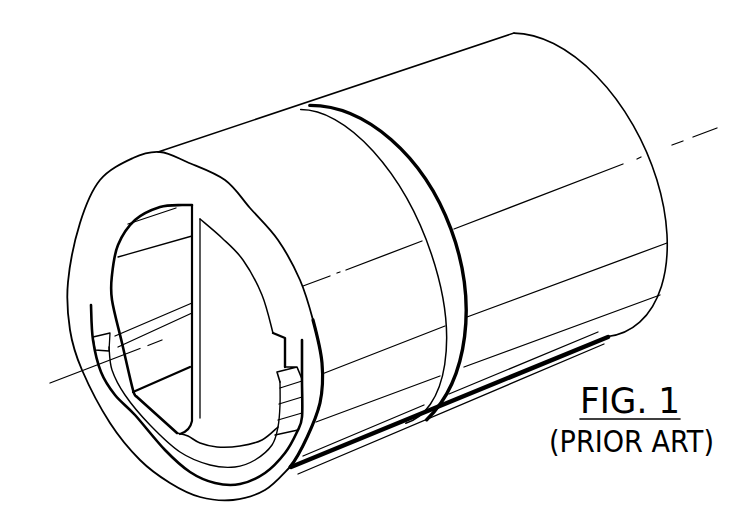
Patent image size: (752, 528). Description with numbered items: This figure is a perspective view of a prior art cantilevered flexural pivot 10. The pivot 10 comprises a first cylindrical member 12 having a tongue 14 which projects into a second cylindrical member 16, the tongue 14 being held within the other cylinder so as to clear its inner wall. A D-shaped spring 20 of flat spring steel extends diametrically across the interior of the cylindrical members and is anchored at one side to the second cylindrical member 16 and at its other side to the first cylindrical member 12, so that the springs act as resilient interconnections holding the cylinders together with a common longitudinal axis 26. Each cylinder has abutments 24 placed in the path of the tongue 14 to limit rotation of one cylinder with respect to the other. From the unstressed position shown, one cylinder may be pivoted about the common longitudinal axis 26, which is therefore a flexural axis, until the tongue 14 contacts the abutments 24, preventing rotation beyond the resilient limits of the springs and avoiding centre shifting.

The pivot 10 is at (376, 56).
The first cylindrical member 12 is at (564, 65).
The tongue 14 is at (198, 452).
The second cylindrical member 16 is at (82, 238).
The D-shaped spring 20 is at (208, 342).
The abutments 24 is at (80, 345).
The common longitudinal axis 26 is at (692, 137).